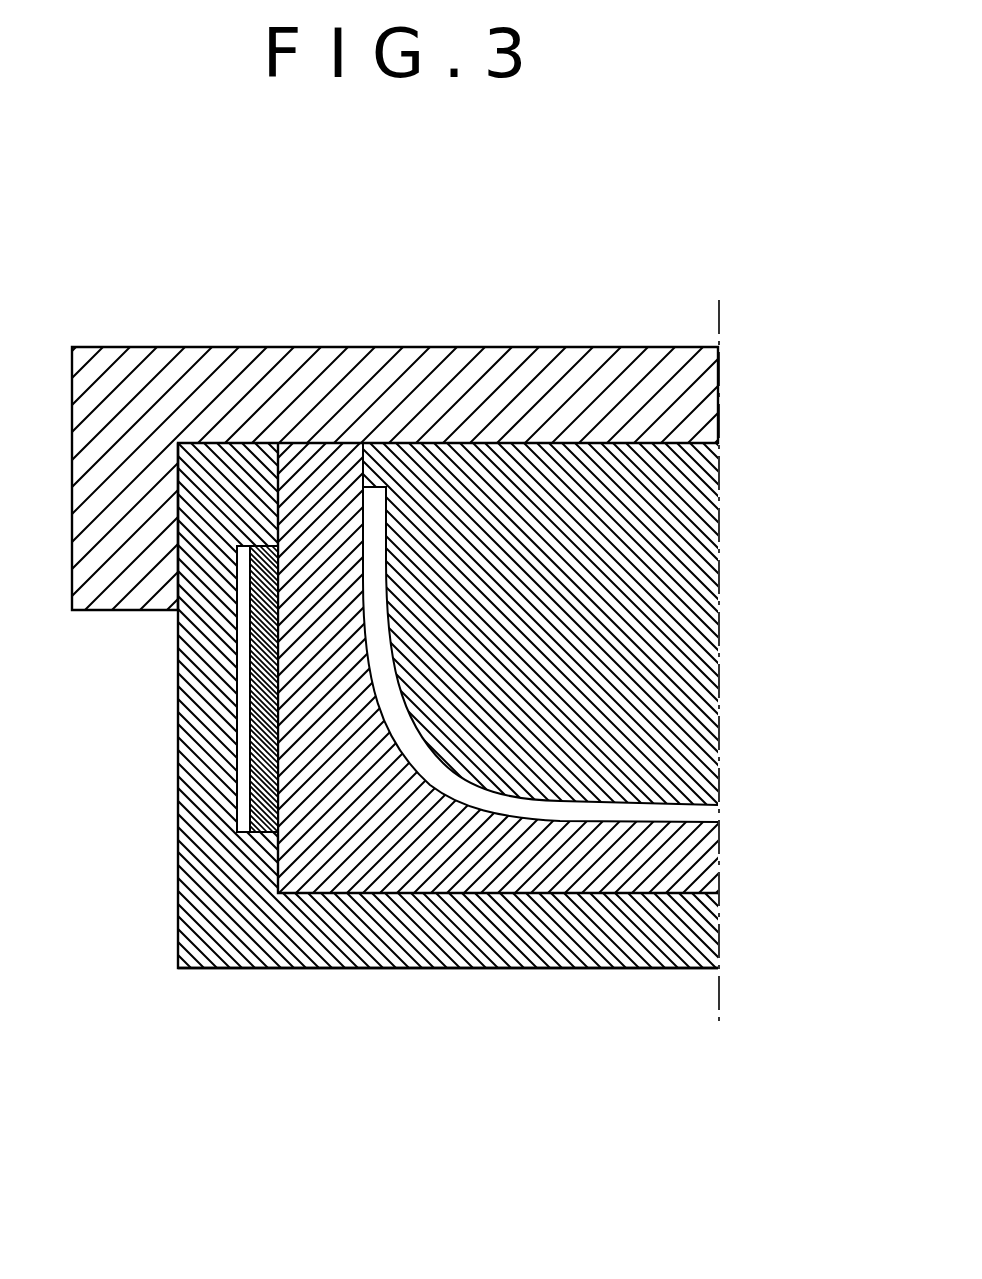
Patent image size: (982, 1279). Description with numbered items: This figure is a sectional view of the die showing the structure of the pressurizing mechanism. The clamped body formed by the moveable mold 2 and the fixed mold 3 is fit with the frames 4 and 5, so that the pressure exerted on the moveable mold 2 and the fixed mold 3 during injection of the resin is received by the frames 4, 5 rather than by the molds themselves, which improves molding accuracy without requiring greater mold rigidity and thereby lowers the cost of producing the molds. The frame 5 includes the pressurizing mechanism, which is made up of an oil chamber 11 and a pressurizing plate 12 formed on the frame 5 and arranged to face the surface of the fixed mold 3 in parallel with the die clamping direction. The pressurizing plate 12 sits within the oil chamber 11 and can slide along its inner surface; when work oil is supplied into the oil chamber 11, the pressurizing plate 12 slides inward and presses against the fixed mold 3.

The moveable mold 2 is at (677, 567).
The fixed mold 3 is at (698, 861).
The frame 4 is at (262, 372).
The frame 5 is at (533, 943).
The oil chamber 11 is at (240, 690).
The pressurizing plate 12 is at (262, 797).